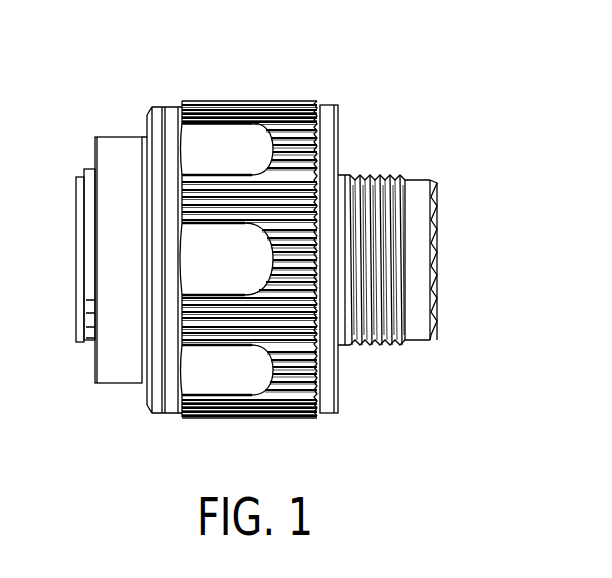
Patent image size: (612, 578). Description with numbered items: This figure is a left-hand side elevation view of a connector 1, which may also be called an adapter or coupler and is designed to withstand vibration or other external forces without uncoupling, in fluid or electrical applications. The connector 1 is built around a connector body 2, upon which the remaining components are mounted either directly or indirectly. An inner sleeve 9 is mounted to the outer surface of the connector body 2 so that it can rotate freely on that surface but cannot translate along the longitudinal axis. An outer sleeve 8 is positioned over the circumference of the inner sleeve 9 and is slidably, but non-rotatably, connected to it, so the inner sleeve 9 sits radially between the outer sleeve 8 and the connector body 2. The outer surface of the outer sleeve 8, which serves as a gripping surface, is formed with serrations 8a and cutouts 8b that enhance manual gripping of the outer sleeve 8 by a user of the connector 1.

The connector 1 is at (410, 130).
The connector body 2 is at (417, 330).
The outer sleeve 8 is at (174, 106).
The serrations 8a is at (295, 102).
The cutouts 8b is at (213, 133).
The inner sleeve 9 is at (108, 148).